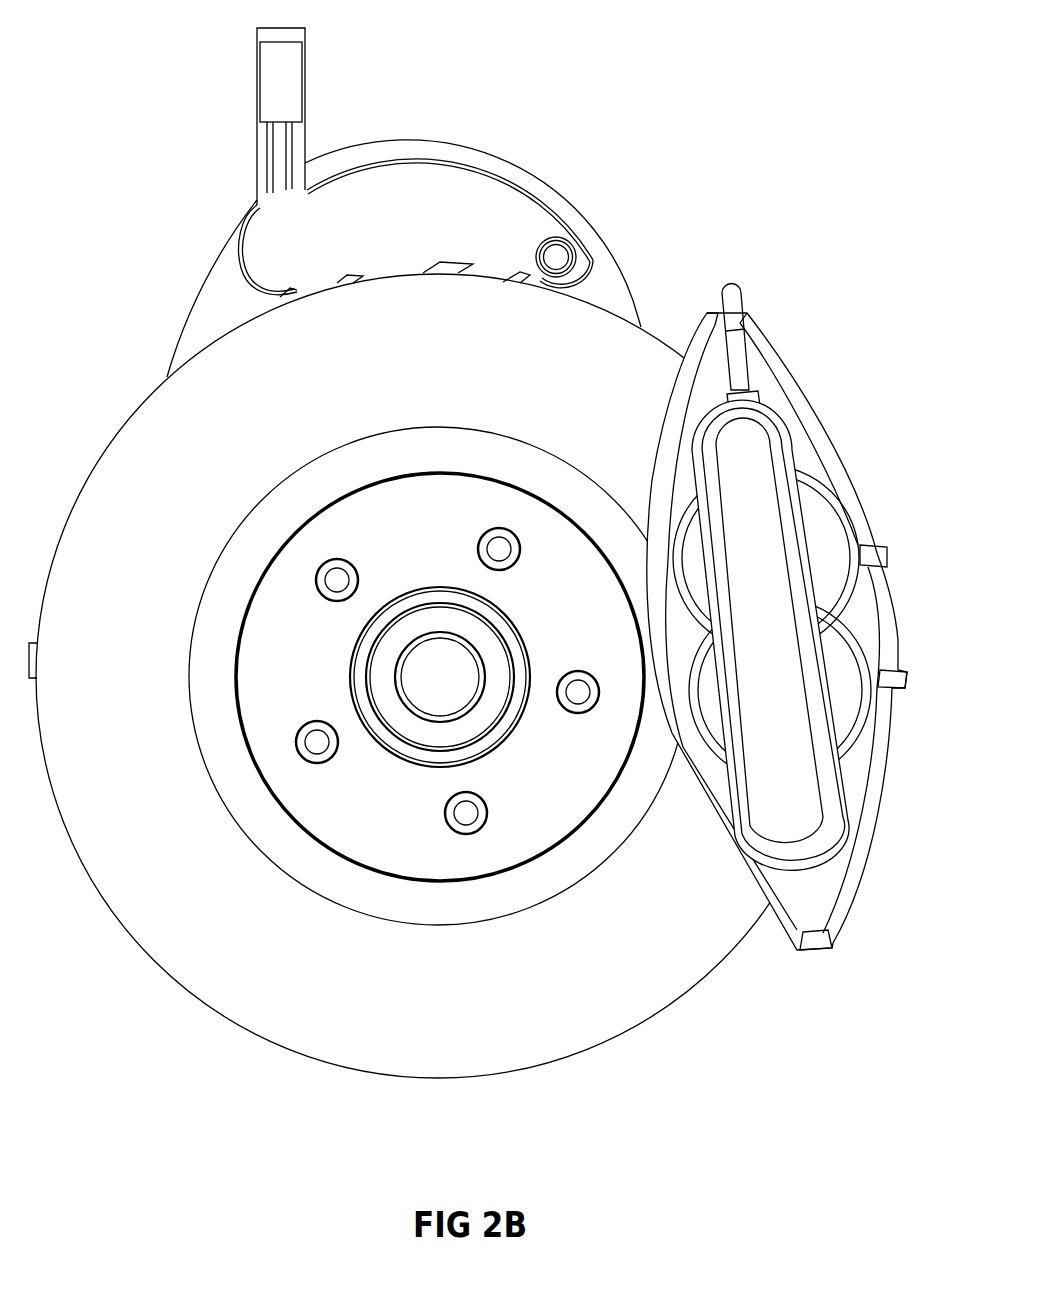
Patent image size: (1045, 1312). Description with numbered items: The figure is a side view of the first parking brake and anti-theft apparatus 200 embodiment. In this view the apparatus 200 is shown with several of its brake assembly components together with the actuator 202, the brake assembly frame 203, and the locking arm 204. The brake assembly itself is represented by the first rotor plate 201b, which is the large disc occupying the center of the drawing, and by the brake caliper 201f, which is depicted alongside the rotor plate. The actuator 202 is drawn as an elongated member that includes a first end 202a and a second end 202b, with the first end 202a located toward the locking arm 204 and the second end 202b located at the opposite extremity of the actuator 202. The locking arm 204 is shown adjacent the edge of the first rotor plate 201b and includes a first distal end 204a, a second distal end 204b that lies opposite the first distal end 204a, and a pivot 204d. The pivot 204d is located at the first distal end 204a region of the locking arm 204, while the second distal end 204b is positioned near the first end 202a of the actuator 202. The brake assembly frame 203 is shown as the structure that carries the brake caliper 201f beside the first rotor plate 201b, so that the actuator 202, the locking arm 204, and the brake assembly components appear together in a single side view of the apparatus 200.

The apparatus 200 is at (143, 69).
The first rotor plate 201b is at (213, 870).
The brake caliper 201f is at (807, 897).
The actuator 202 is at (287, 70).
The first end 202a is at (283, 192).
The second end 202b is at (287, 37).
The brake assembly frame 203 is at (602, 282).
The locking arm 204 is at (432, 224).
The first distal end 204a is at (586, 257).
The second distal end 204b is at (258, 262).
The pivot 204d is at (556, 257).